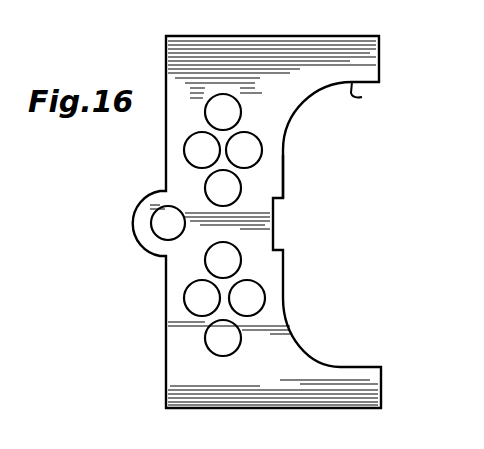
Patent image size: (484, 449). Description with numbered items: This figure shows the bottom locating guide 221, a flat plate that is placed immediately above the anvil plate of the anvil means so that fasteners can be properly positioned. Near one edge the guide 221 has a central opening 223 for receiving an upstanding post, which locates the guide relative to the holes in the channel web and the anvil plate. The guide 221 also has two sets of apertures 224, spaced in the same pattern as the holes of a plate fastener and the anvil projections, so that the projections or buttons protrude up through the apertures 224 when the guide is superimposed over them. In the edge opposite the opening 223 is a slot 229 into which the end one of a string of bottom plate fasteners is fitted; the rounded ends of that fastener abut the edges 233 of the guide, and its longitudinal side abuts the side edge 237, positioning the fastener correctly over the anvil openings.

The bottom locating guide 221 is at (272, 28).
The central opening 223 is at (157, 223).
The apertures 224 is at (233, 112).
The slot 229 is at (368, 256).
The edges 233 is at (362, 97).
The side edge 237 is at (284, 180).